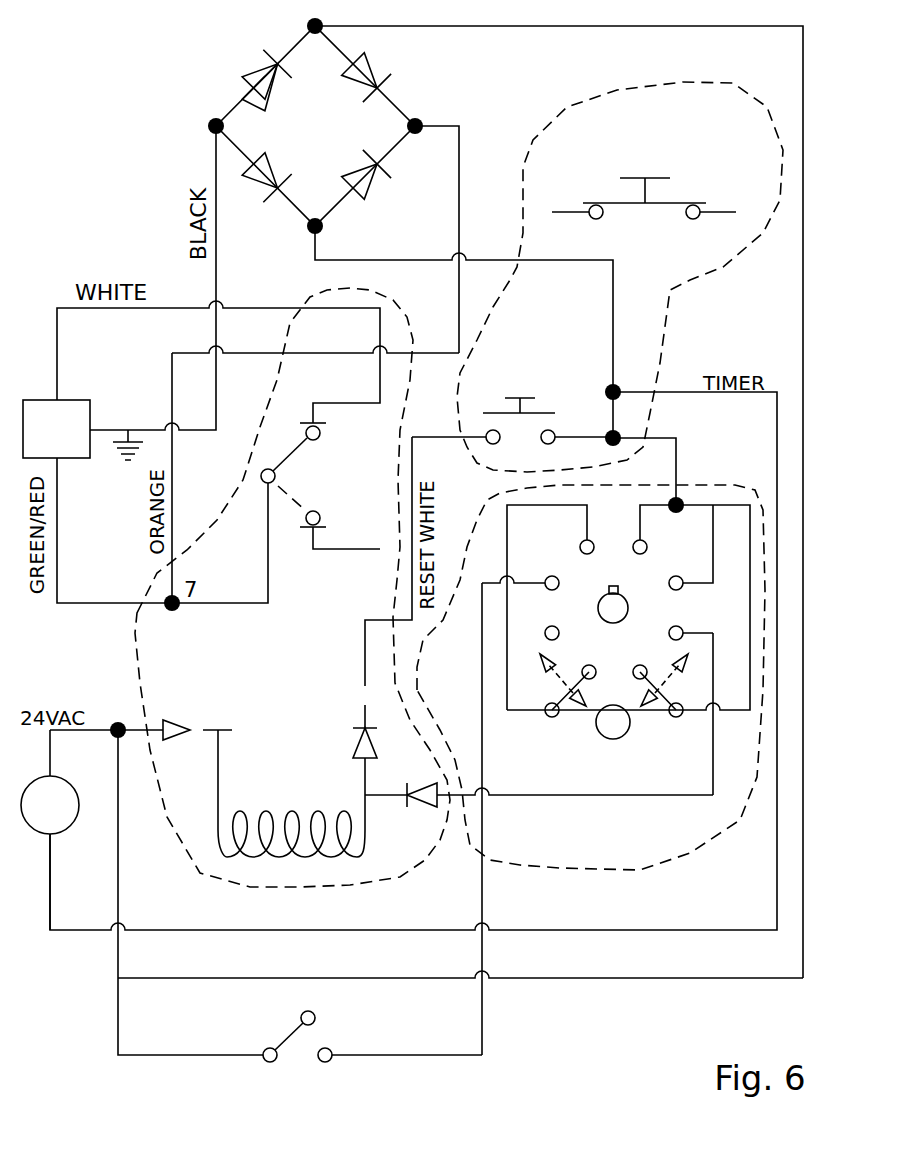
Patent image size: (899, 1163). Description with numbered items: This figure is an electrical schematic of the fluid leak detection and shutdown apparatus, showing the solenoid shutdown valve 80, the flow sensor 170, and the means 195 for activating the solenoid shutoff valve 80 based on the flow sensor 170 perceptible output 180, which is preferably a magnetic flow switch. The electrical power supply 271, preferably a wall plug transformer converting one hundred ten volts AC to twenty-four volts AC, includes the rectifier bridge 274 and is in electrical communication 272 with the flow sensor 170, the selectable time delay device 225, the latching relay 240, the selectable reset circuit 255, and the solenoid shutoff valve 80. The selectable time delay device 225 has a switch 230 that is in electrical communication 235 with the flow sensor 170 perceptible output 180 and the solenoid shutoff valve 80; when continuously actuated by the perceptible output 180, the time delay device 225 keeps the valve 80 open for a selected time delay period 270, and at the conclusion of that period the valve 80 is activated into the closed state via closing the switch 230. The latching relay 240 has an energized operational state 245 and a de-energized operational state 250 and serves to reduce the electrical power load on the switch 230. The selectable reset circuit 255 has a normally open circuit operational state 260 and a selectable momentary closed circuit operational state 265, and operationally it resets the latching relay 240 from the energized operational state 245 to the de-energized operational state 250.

The means for activating the solenoid shutoff valve 195 is at (142, 57).
The rectifier bridge 274 is at (281, 46).
The selectable momentary closed circuit operational state 265 is at (674, 146).
The selectable reset circuit 255 is at (688, 280).
The normally open circuit operational state 260 is at (582, 396).
The solenoid shutdown valve 80 is at (73, 400).
The electrical communication 235 is at (380, 382).
The de-energized operational state 250 is at (300, 460).
The energized operational state 245 is at (288, 492).
The latching relay 240 is at (136, 652).
The selected time delay period 270 is at (597, 730).
The switch 230 is at (660, 703).
The selectable time delay device 225 is at (609, 884).
The electrical power supply 271 is at (72, 826).
The electrical communication 272 is at (70, 932).
The flow sensor 170 is at (288, 1038).
The perceptible output 180 is at (396, 1057).